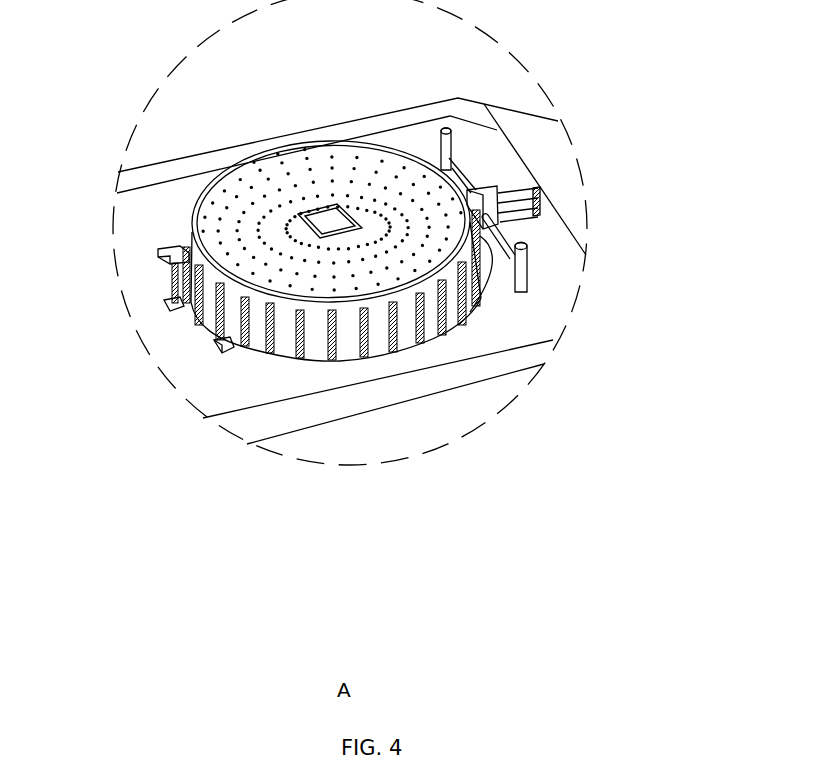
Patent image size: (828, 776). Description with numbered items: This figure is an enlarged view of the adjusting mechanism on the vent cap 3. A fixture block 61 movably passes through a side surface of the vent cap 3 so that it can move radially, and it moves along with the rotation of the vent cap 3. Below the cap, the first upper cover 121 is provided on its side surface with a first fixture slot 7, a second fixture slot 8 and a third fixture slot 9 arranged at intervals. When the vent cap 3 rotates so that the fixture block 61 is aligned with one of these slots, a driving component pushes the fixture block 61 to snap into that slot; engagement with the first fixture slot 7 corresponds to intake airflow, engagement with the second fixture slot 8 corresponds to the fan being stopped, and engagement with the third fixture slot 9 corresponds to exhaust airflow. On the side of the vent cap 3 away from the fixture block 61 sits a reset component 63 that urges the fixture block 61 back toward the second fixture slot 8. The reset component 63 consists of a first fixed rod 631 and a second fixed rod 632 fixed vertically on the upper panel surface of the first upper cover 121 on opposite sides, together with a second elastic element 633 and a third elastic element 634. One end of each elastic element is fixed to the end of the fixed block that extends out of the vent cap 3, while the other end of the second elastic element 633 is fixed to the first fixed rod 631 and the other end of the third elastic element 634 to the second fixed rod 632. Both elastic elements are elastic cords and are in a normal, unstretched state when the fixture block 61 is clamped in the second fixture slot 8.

The vent cap 3 is at (285, 170).
The fixture block 61 is at (187, 250).
The first fixture slot 7 is at (158, 252).
The second fixture slot 8 is at (173, 298).
The third fixture slot 9 is at (222, 340).
The first upper cover 121 is at (243, 385).
The reset component 63 is at (573, 193).
The first fixed rod 631 is at (451, 150).
The second elastic element 633 is at (470, 182).
The third elastic element 634 is at (500, 232).
The second fixed rod 632 is at (570, 252).